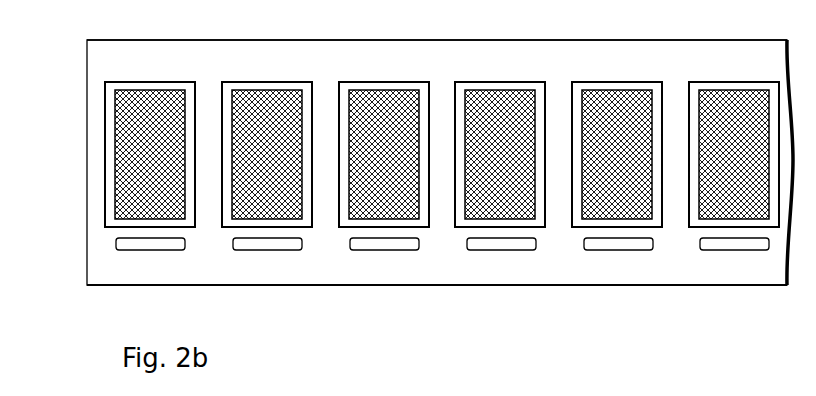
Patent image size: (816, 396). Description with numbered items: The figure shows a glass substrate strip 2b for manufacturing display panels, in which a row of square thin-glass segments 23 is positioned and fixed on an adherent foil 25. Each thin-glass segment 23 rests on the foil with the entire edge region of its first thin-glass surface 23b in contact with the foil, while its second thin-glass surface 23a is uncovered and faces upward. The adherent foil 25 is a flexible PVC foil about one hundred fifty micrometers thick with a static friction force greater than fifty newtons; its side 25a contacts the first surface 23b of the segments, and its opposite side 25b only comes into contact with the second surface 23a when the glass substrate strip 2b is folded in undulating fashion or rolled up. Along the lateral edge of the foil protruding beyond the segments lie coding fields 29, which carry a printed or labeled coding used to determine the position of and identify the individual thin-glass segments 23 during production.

The thin-glass segments 23 is at (404, 154).
The second thin-glass surface 23a is at (118, 152).
The first thin-glass surface 23b is at (110, 176).
The adherent foil 25 is at (100, 240).
The side of the adherent foil 25a is at (102, 228).
The opposite side of the adherent foil 25b is at (100, 213).
The coding fields 29 is at (503, 251).
The glass substrate strip 2b is at (313, 298).